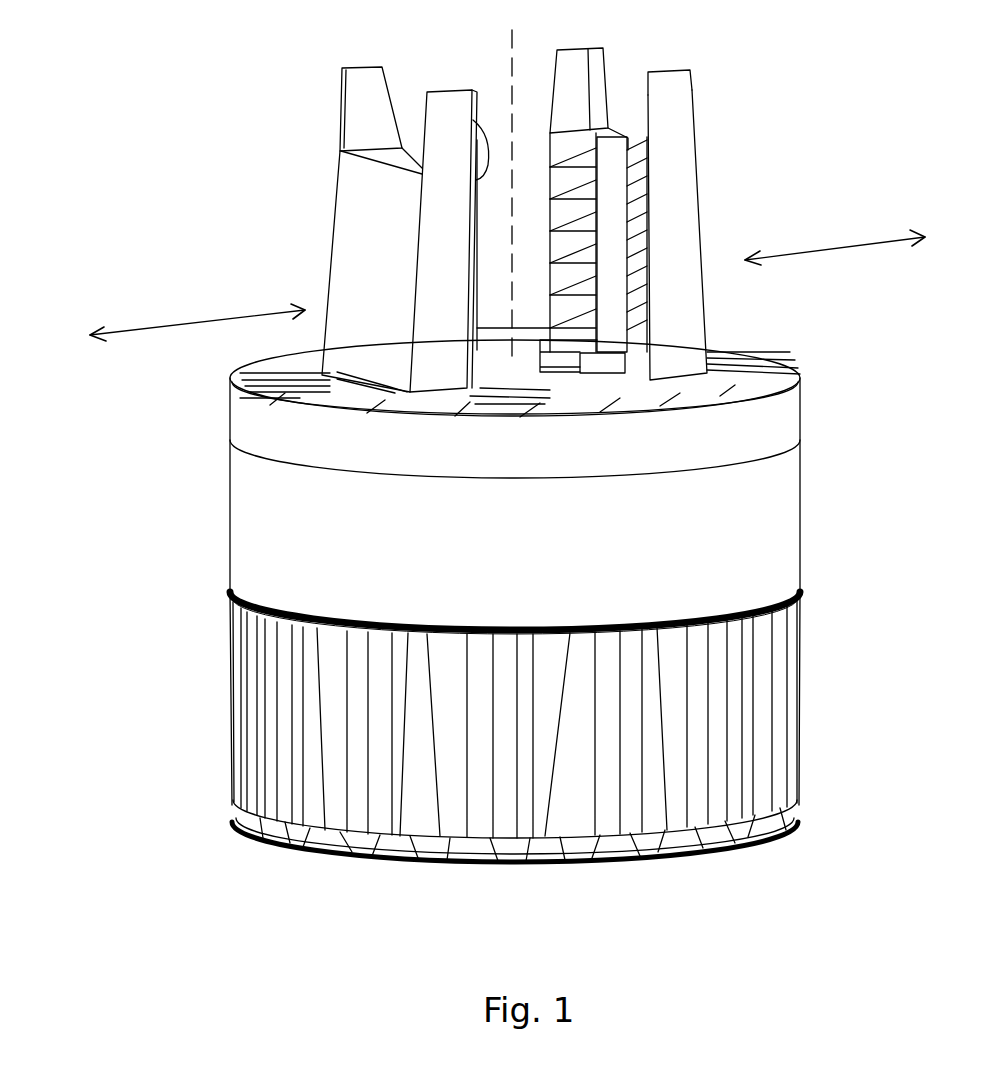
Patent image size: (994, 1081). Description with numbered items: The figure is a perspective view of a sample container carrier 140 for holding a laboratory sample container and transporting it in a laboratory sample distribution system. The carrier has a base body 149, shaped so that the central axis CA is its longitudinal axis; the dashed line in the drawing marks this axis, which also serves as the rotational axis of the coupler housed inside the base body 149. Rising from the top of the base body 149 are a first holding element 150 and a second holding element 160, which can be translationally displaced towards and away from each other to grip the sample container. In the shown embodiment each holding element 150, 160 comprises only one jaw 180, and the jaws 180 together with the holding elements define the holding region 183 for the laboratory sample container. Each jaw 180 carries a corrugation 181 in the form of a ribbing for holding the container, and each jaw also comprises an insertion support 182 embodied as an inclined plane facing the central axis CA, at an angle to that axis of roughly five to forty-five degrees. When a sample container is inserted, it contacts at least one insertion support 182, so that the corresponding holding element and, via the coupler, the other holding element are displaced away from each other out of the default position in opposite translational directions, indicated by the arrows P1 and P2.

The sample container carrier 140 is at (97, 175).
The base body 149 is at (803, 498).
The first holding element 150 is at (328, 241).
The second holding element 160 is at (697, 207).
The jaw 180 is at (340, 117).
The corrugation 181 is at (480, 176).
The insertion support 182 is at (632, 150).
The holding region 183 is at (497, 170).
The central axis CA is at (513, 33).
The arrow P1 is at (158, 329).
The arrow P2 is at (830, 253).